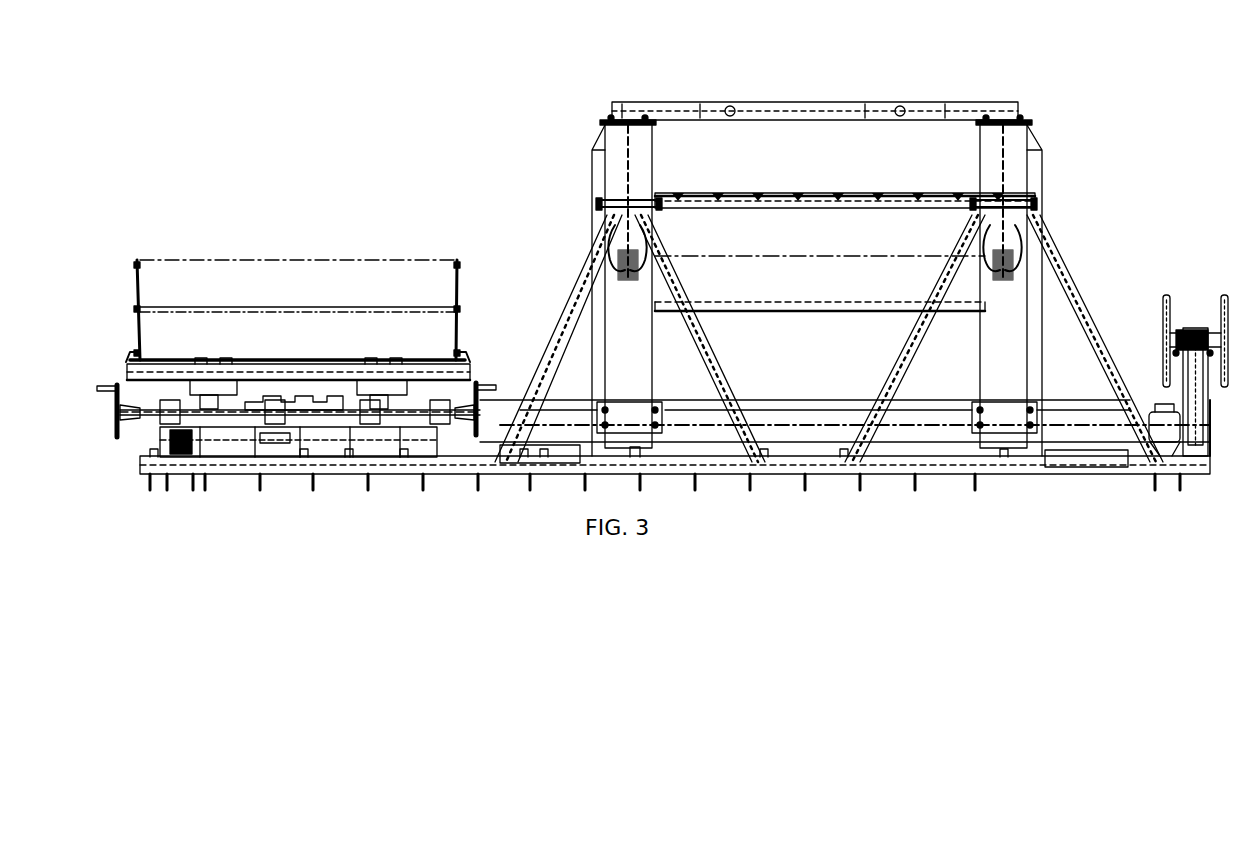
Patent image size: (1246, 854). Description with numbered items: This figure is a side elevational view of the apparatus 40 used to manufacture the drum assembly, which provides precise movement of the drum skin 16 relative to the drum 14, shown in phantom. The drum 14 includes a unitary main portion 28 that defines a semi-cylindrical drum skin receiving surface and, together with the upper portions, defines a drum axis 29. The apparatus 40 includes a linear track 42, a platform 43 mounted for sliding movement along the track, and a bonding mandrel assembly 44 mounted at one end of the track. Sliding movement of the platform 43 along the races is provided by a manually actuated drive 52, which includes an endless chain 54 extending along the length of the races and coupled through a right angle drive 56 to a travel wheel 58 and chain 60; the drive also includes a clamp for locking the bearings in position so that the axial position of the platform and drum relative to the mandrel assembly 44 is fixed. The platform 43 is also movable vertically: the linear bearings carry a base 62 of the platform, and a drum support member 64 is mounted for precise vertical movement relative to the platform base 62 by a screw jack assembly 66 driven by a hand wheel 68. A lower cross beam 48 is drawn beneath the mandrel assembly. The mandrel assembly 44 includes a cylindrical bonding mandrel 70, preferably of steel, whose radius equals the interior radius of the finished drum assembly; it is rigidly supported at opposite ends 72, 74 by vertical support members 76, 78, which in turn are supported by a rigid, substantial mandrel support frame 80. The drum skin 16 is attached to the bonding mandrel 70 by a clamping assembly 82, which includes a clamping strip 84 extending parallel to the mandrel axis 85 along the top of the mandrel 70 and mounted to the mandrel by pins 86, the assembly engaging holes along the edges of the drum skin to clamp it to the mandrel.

The drum 14 is at (306, 321).
The drum skin 16 is at (832, 312).
The unitary main portion 28 is at (305, 298).
The drum axis 29 is at (350, 260).
The apparatus for manufacturing the drum assembly 40 is at (845, 280).
The linear track 42 is at (152, 452).
The platform 43 is at (484, 338).
The bonding mandrel assembly 44 is at (830, 190).
The lower cross beam 48 is at (684, 470).
The manually actuated drive 52 is at (1176, 355).
The endless chain 54 is at (1060, 455).
The right angle drive 56 is at (1152, 424).
The travel wheel 58 is at (1163, 320).
The chain 60 is at (1186, 368).
The platform base 62 is at (168, 420).
The drum support member 64 is at (128, 375).
The screw jack assembly 66 is at (410, 416).
The hand wheel 68 is at (118, 407).
The bonding mandrel 70 is at (791, 313).
The mandrel end 72 is at (676, 238).
The mandrel end 74 is at (955, 240).
The vertical support member 76 is at (655, 165).
The vertical support member 78 is at (985, 165).
The mandrel support frame 80 is at (1048, 146).
The clamping assembly 82 is at (845, 170).
The clamping strip 84 is at (745, 193).
The mandrel axis 85 is at (822, 258).
The pins 86 is at (683, 195).